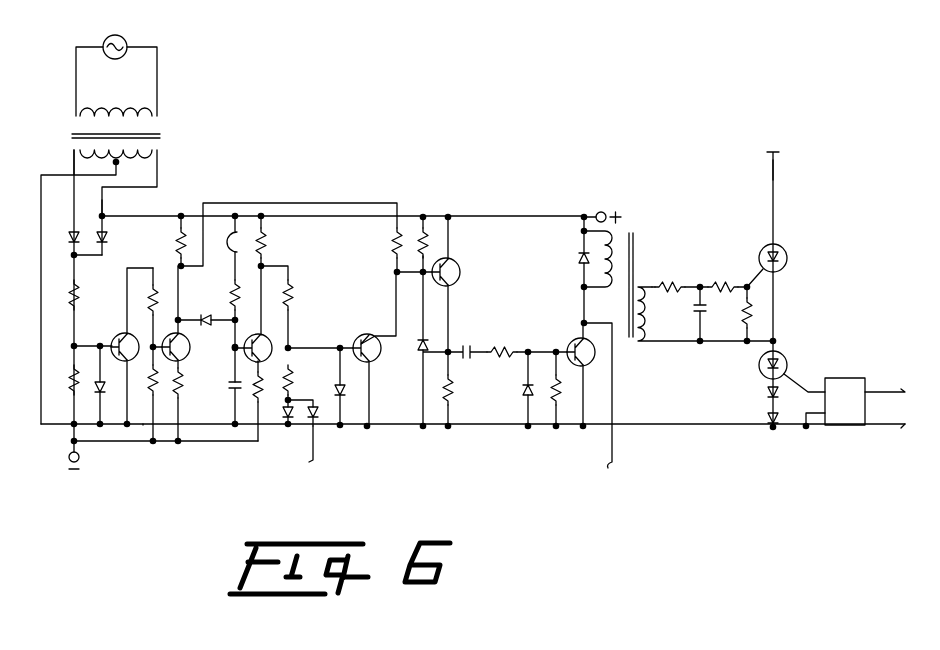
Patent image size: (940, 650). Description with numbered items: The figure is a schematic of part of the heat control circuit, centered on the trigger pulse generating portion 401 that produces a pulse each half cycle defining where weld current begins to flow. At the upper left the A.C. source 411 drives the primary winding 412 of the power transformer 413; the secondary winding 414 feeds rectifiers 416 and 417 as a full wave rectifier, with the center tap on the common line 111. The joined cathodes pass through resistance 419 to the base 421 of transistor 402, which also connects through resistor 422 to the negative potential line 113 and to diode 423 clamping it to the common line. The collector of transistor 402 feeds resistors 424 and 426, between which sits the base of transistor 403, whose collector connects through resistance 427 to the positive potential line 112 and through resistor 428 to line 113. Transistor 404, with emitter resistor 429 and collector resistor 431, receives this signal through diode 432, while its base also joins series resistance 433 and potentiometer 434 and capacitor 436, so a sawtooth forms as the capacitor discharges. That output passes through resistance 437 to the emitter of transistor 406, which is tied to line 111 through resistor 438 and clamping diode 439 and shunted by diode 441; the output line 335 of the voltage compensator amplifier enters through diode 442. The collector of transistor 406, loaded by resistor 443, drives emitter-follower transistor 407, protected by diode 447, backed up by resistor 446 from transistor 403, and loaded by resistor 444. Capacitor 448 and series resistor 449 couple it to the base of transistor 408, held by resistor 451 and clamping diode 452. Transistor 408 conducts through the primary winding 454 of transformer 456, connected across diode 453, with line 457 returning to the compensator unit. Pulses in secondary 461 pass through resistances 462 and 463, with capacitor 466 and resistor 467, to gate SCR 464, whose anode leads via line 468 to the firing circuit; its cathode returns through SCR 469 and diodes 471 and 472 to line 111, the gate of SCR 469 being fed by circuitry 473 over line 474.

The A.C. source 411 is at (106, 38).
The primary winding 412 is at (78, 112).
The power transformer 413 is at (78, 133).
The secondary winding 414 is at (152, 156).
The positive potential line 112 is at (160, 213).
The trigger pulse generating portion 401 is at (152, 208).
The rectifier 416 is at (72, 234).
The rectifier 417 is at (108, 238).
The resistance 419 is at (76, 298).
The base 421 is at (100, 346).
The resistor 422 is at (73, 380).
The diode 423 is at (72, 426).
The negative potential line 113 is at (88, 444).
The common line 111 is at (143, 426).
The transistor 402 is at (138, 336).
The resistor 424 is at (153, 292).
The resistor 426 is at (153, 389).
The transistor 403 is at (200, 340).
The resistance 427 is at (180, 238).
The resistor 428 is at (179, 390).
The diode 432 is at (206, 323).
The resistance 433 is at (232, 300).
The potentiometer 434 is at (229, 215).
The capacitor 436 is at (234, 382).
The resistor 429 is at (264, 248).
The transistor 404 is at (270, 326).
The resistance 437 is at (290, 300).
The resistor 431 is at (258, 410).
The resistor 438 is at (288, 374).
The clamping diode 439 is at (284, 414).
The diode 442 is at (314, 408).
The output line 335 is at (316, 442).
The diode 441 is at (346, 392).
The transistor 406 is at (377, 356).
The resistor 446 is at (396, 250).
The resistor 443 is at (427, 241).
The transistor 407 is at (460, 268).
The diode 447 is at (432, 346).
The capacitor 448 is at (472, 351).
The series resistor 449 is at (504, 354).
The resistor 444 is at (450, 396).
The clamping diode 452 is at (524, 392).
The resistor 451 is at (554, 400).
The transistor 408 is at (590, 366).
The diode 453 is at (582, 256).
The transformer 456 is at (638, 244).
The primary winding 454 is at (616, 286).
The line 457 is at (614, 375).
The secondary 461 is at (644, 342).
The resistance 462 is at (686, 272).
The resistance 463 is at (742, 272).
The capacitor 466 is at (712, 310).
The resistor 467 is at (748, 324).
The SCR 464 is at (786, 252).
The line 468 is at (776, 194).
The SCR 469 is at (760, 372).
The diode 471 is at (767, 392).
The diode 472 is at (768, 420).
The circuitry 473 is at (838, 380).
The line 474 is at (884, 392).